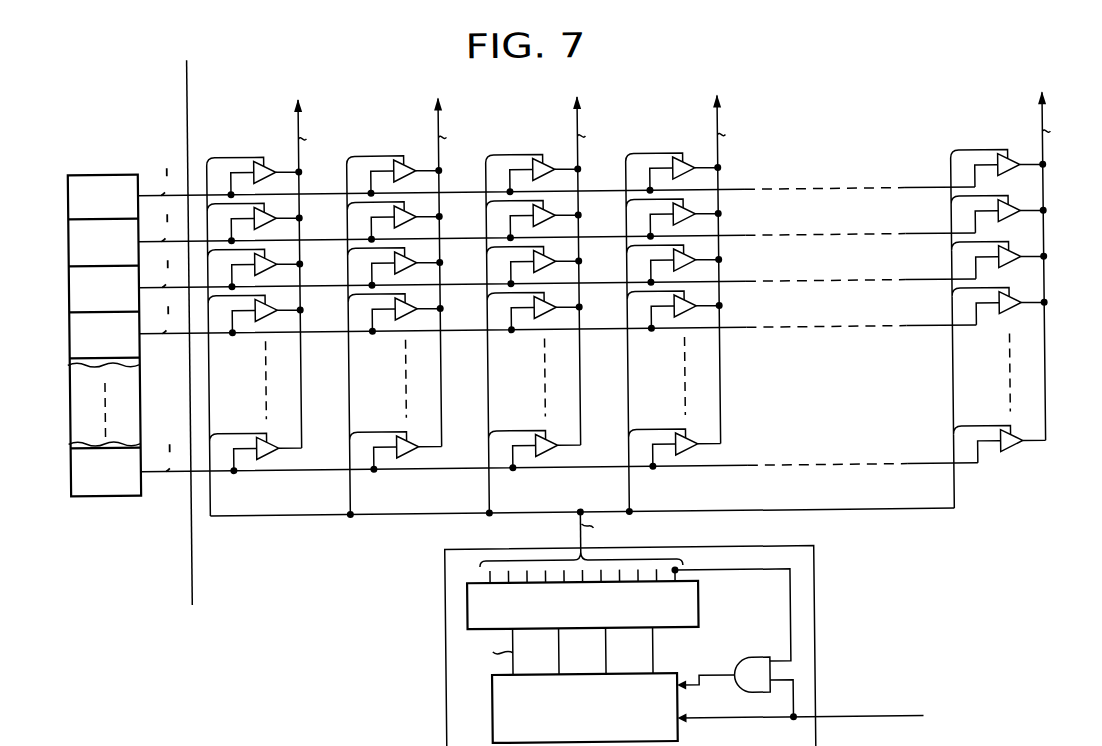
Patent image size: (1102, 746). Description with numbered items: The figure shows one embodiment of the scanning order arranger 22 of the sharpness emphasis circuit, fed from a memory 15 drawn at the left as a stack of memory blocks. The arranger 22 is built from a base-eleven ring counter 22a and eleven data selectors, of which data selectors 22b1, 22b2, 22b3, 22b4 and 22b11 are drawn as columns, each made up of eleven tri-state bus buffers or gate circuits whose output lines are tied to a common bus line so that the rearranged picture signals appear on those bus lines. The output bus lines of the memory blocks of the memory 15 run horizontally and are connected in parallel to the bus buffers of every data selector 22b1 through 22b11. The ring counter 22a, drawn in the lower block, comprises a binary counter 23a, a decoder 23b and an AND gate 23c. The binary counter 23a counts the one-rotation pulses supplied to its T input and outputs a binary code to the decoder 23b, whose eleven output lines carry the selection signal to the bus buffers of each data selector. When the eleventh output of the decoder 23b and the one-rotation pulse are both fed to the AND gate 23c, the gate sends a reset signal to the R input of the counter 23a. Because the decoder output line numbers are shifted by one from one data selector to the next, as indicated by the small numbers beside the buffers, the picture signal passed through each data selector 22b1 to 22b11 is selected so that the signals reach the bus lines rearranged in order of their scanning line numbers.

The memory 15 is at (100, 174).
The scanning order arranger 22 is at (188, 542).
The base-11 ring counter 22a is at (441, 669).
The data selector 22b1 is at (241, 157).
The data selector 22b2 is at (381, 157).
The data selector 22b3 is at (520, 157).
The data selector 22b4 is at (660, 157).
The data selector 22b11 is at (985, 157).
The binary counter 23a is at (674, 744).
The decoder 23b is at (694, 606).
The AND gate 23c is at (746, 663).